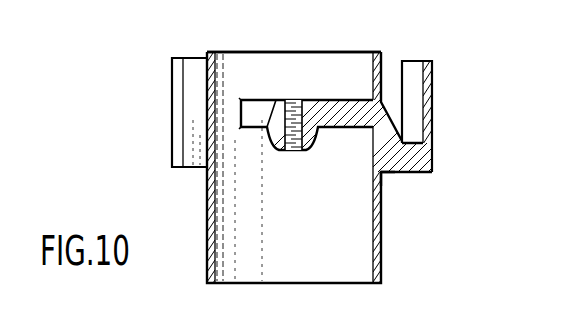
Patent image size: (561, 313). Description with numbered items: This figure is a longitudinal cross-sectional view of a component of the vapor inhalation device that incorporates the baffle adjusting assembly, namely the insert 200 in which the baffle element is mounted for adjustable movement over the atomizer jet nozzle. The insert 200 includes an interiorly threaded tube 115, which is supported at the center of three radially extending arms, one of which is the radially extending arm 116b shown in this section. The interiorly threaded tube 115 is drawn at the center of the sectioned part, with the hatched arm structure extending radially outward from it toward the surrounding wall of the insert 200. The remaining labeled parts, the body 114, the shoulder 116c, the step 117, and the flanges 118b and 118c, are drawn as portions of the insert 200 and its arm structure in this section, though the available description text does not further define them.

The tubular body 114 is at (378, 237).
The interiorly threaded tube 115 is at (285, 97).
The radially extending arm 116b is at (205, 170).
The shoulder of right flange 116c is at (412, 156).
The step 117 is at (385, 176).
The left flange 118b is at (176, 146).
The right flange 118c is at (428, 61).
The insert 200 is at (343, 51).